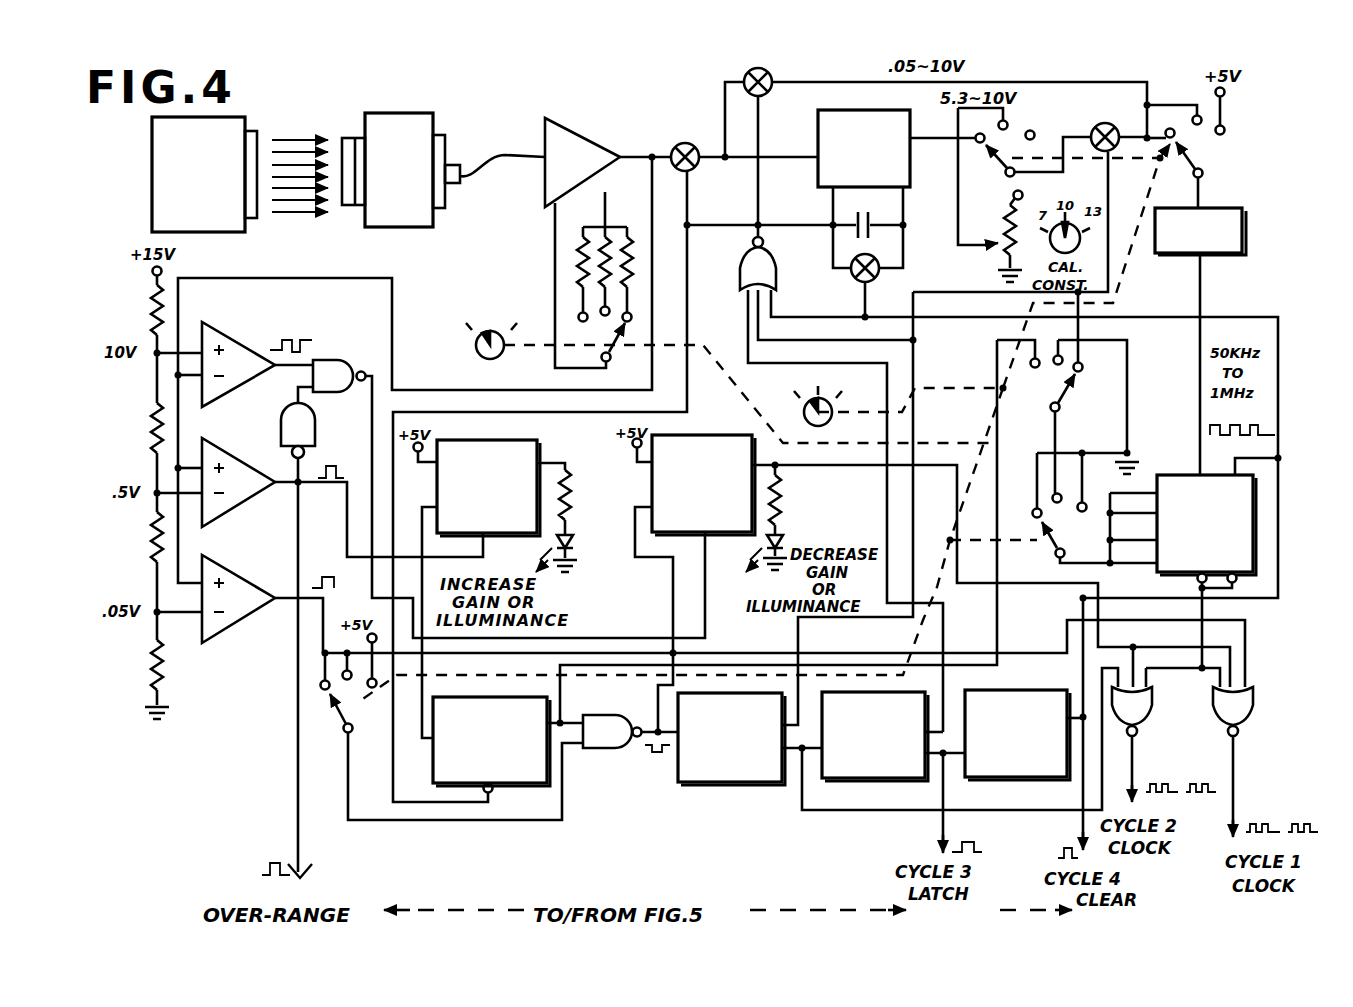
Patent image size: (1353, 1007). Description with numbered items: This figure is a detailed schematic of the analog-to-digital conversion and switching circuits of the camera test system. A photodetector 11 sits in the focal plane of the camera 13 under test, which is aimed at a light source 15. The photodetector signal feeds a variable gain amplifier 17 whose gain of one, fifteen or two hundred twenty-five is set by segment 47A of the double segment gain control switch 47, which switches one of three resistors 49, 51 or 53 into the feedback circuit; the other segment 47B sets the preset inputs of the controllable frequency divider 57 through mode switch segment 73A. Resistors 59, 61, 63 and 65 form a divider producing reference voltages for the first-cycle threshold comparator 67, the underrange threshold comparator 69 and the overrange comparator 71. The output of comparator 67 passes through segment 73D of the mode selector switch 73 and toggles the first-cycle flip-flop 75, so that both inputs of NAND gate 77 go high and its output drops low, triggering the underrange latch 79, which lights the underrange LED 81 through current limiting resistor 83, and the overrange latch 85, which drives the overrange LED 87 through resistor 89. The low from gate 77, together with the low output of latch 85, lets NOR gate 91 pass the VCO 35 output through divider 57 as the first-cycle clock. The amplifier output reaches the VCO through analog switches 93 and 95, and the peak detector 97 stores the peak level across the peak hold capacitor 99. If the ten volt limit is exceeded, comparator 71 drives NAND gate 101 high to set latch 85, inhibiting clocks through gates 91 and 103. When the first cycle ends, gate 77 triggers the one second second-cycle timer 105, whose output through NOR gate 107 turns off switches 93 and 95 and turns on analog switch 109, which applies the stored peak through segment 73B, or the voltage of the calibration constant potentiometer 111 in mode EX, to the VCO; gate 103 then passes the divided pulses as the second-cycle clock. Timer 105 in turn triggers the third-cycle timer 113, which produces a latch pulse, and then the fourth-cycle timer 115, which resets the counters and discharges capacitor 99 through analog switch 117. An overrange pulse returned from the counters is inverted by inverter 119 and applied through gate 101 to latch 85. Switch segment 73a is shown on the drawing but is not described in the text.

The photodetector 11 is at (445, 130).
The camera 13 is at (392, 118).
The light source 15 is at (152, 178).
The variable gain amplifier 17 is at (540, 120).
The VCO 35 is at (1222, 256).
The double segment gain control switch 47 is at (466, 328).
The gain switch segment 47A is at (612, 362).
The gain switch segment 47B is at (1058, 412).
The resistor 49 is at (632, 235).
The resistor 51 is at (602, 237).
The resistor 53 is at (573, 258).
The controllable frequency divider 57 is at (1256, 545).
The resistor 59 is at (145, 315).
The resistor 61 is at (148, 440).
The resistor 63 is at (148, 538).
The resistor 65 is at (148, 680).
The cycle 1 threshold comparator 67 is at (242, 632).
The underrange threshold comparator 69 is at (238, 515).
The comparator 71 is at (218, 325).
The mode selector switch 73 is at (803, 412).
The mode switch segment 73A is at (1048, 548).
The mode switch segment 73B is at (990, 160).
The mode switch section 73a is at (1205, 180).
The mode switch segment 73D is at (338, 722).
The cycle 1 flip-flop 75 is at (455, 783).
The NAND gate 77 is at (600, 750).
The underrange latch 79 is at (460, 437).
The underrange light emitting diode display 81 is at (578, 538).
The current limiting resistor 83 is at (575, 475).
The overrange latch 85 is at (732, 435).
The overrange display LED 87 is at (790, 538).
The resistor 89 is at (782, 492).
The NOR gate 91 is at (1250, 720).
The digitally controlled analog switch 93 is at (676, 145).
The digitally controlled analog switch 95 is at (744, 78).
The peak detector 97 is at (818, 140).
The peak hold capacitor 99 is at (855, 214).
The NAND gate 101 is at (345, 360).
The NOR gate 103 is at (1148, 720).
The cycle 2 timer 105 is at (700, 782).
The NOR gate 107 is at (778, 275).
The analog switch 109 is at (1112, 126).
The calibration constant potentiometer 111 is at (1004, 245).
The cycle 3 timer 113 is at (840, 778).
The cycle 4 timer 115 is at (990, 778).
The analog switch 117 is at (853, 257).
The inverter 119 is at (282, 432).